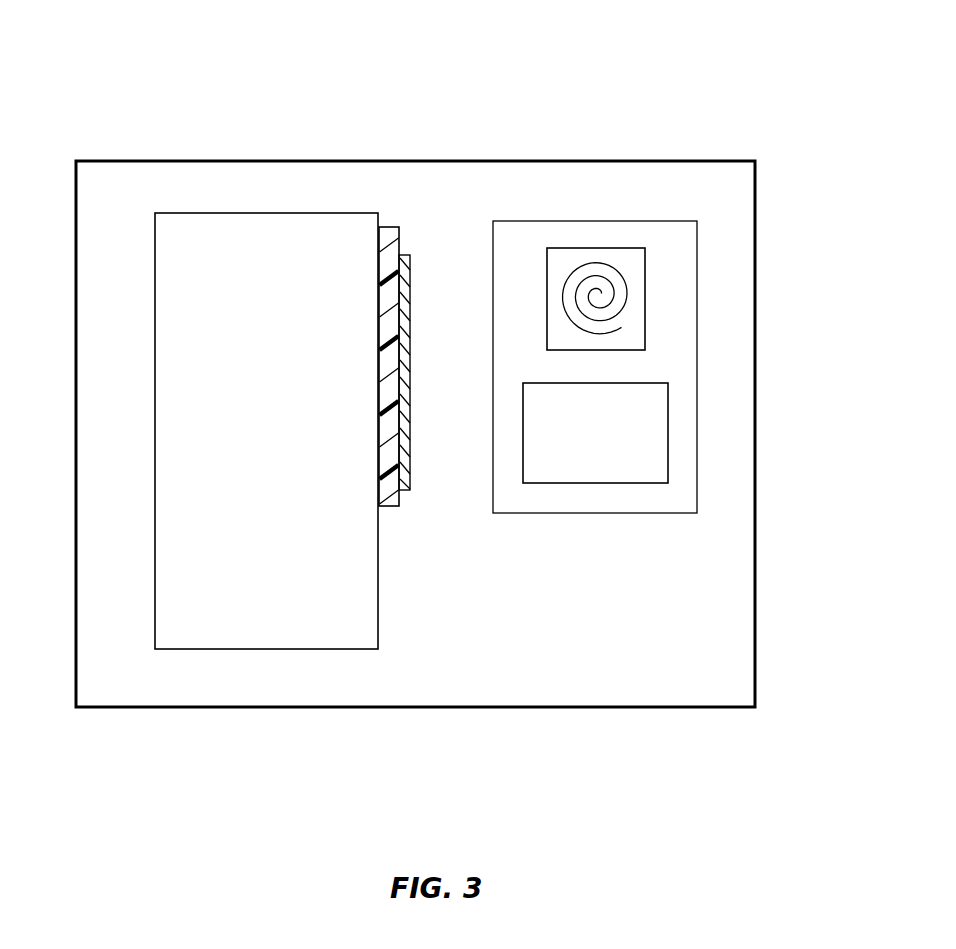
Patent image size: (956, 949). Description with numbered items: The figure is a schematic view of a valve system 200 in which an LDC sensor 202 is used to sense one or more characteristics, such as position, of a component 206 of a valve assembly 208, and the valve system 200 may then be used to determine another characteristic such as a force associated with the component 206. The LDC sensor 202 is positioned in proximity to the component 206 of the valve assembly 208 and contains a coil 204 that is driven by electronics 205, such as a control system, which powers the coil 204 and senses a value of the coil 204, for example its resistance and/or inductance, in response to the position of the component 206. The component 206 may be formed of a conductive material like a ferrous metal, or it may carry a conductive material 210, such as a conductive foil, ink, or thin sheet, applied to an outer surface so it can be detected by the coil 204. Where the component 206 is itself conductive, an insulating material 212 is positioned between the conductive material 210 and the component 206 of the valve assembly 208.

The valve system 200 is at (162, 96).
The LDC sensor 202 is at (563, 221).
The coil 204 is at (587, 255).
The electronics 205 is at (603, 483).
The component 206 is at (229, 213).
The valve assembly 208 is at (207, 667).
The conductive material 210 is at (409, 272).
The insulating material 212 is at (388, 242).